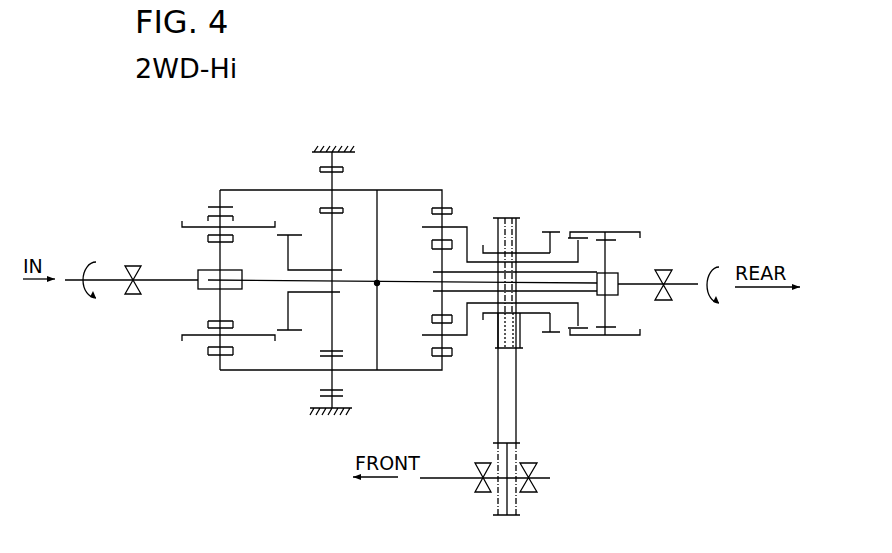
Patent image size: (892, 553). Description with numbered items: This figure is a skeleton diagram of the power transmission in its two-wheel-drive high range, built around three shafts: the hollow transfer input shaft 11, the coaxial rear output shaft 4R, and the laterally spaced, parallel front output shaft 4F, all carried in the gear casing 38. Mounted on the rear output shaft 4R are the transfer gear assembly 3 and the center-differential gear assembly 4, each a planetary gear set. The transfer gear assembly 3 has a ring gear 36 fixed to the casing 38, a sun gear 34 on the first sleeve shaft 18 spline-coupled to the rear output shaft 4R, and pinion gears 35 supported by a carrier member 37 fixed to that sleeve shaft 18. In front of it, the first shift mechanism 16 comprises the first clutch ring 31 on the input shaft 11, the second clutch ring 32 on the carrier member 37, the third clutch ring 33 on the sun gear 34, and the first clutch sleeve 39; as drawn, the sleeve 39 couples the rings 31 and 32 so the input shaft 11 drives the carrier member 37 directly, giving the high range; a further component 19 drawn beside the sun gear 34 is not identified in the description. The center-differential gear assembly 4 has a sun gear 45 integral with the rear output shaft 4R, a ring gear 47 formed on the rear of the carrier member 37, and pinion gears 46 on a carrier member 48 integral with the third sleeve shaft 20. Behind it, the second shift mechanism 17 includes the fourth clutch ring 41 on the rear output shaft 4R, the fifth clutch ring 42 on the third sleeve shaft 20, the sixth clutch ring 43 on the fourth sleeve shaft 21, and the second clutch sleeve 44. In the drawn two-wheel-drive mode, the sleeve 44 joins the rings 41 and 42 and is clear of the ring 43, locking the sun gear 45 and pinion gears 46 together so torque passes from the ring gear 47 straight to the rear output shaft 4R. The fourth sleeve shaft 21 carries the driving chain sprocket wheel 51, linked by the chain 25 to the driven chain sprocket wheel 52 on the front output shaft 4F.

The transfer gear assembly 3 is at (320, 179).
The center-differential gear assembly 4 is at (428, 189).
The transfer input shaft 11 is at (155, 285).
The first shift mechanism 16 is at (197, 354).
The second shift mechanism 17 is at (578, 353).
The first sleeve shaft 18 is at (392, 285).
The gear hub 19 is at (313, 293).
The third sleeve shaft 20 is at (537, 316).
The fourth sleeve shaft 21 is at (517, 350).
The chain 25 is at (517, 425).
The first externally-splined clutch ring 31 is at (212, 237).
The second internally-splined clutch ring 32 is at (213, 206).
The third externally-splined clutch ring 33 is at (287, 234).
The sun gear 34 is at (336, 214).
The pinion gears 35 is at (338, 184).
The ring gear 36 is at (345, 168).
The carrier member 37 is at (279, 189).
The gear casing 38 is at (352, 148).
The first splined clutch sleeve 39 is at (193, 227).
The fourth externally splined clutch ring 41 is at (606, 241).
The fifth externally splined clutch ring 42 is at (568, 232).
The sixth externally splined clutch ring 43 is at (545, 236).
The second clutch sleeve 44 is at (632, 230).
The sun gear 45 is at (433, 252).
The pinion gears 46 is at (450, 213).
The ring gear 47 is at (446, 206).
The carrier member 48 is at (459, 353).
The driving chain sprocket wheel 51 is at (516, 217).
The driven chain sprocket wheel 52 is at (517, 510).
The front output shaft 4F is at (442, 479).
The rear output shaft 4R is at (687, 290).